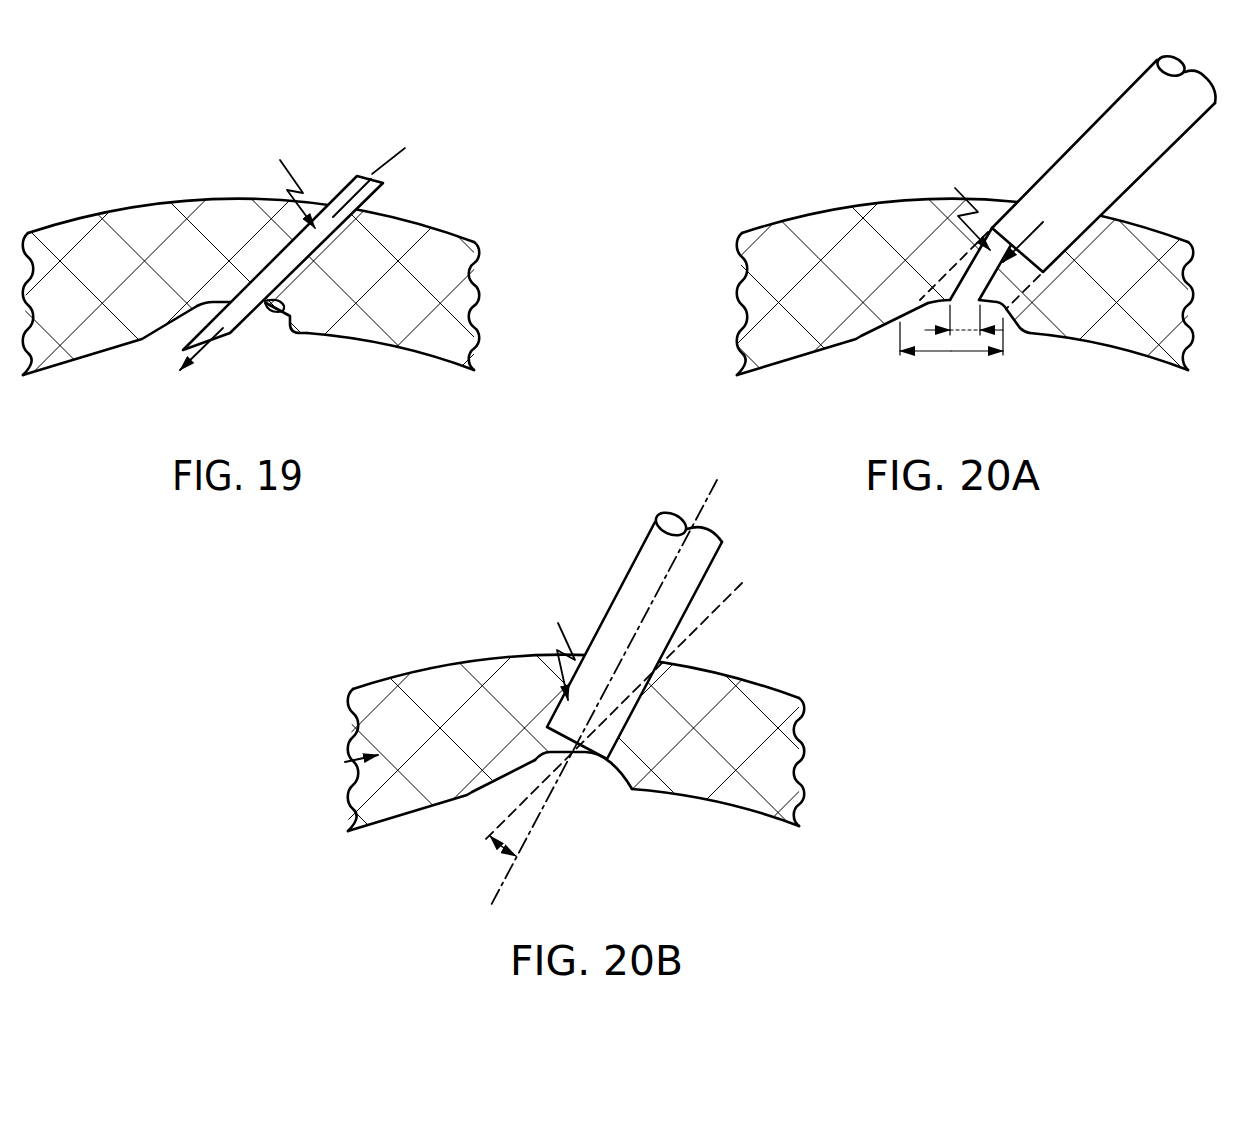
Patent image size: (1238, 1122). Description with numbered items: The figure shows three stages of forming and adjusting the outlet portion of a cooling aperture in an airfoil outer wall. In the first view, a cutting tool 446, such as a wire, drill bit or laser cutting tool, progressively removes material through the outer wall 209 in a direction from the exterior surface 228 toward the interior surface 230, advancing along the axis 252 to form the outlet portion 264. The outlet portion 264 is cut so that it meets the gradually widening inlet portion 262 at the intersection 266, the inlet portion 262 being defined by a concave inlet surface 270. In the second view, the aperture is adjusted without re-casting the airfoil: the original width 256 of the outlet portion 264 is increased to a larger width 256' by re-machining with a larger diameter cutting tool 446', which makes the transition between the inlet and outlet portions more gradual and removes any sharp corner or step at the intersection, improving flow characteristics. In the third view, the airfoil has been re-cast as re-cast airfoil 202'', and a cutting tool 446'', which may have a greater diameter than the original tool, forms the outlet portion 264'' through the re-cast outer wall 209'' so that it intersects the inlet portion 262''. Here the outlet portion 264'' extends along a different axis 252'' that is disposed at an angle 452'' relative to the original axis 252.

In FIG. 19, the outer wall 209 is at (339, 275).
In FIG. 20A, the outer wall 209 is at (875, 275).
In FIG. 19, the exterior surface 228 is at (152, 202).
In FIG. 19, the interior surface 230 is at (87, 358).
In FIG. 19, the inlet portion 262 is at (270, 358).
In FIG. 20A, the inlet portion 262 is at (988, 371).
In FIG. 19, the inlet surface 270 is at (293, 330).
In FIG. 19, the intersection 266 is at (285, 310).
In FIG. 19, the cutting tool 446 is at (281, 279).
In FIG. 19, the outlet portion 264 is at (282, 184).
In FIG. 20A, the outlet portion 264 is at (952, 205).
In FIG. 19, the axis 252 is at (431, 159).
In FIG. 20B, the axis 252 is at (569, 722).
In FIG. 20A, the larger diameter cutting tool 446' is at (1068, 181).
In FIG. 20A, the width 256 is at (925, 344).
In FIG. 20A, the larger width 256' is at (951, 364).
In FIG. 20B, the re-cast outer wall 209'' is at (567, 725).
In FIG. 20B, the inlet portion 262'' is at (585, 819).
In FIG. 20B, the cutting tool 446'' is at (634, 633).
In FIG. 20B, the axis 252'' is at (565, 705).
In FIG. 20B, the angle 452'' is at (467, 863).
In FIG. 20B, the outlet portion 264'' is at (551, 646).
In FIG. 20B, the re-cast airfoil 202'' is at (314, 775).